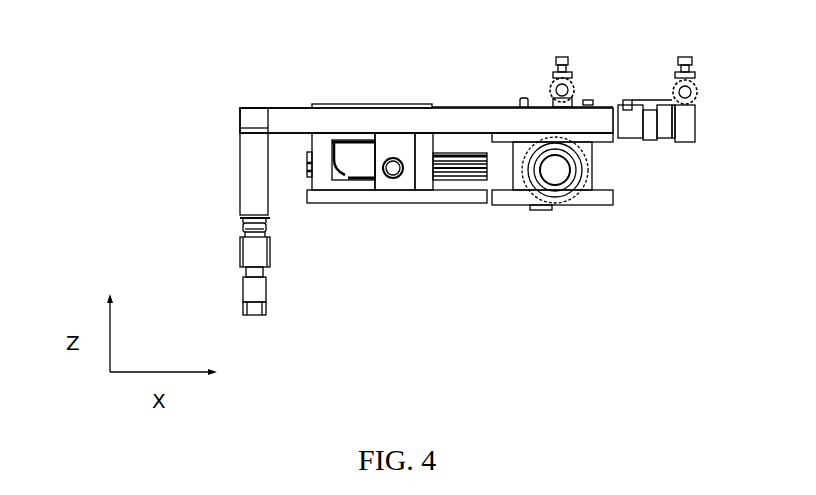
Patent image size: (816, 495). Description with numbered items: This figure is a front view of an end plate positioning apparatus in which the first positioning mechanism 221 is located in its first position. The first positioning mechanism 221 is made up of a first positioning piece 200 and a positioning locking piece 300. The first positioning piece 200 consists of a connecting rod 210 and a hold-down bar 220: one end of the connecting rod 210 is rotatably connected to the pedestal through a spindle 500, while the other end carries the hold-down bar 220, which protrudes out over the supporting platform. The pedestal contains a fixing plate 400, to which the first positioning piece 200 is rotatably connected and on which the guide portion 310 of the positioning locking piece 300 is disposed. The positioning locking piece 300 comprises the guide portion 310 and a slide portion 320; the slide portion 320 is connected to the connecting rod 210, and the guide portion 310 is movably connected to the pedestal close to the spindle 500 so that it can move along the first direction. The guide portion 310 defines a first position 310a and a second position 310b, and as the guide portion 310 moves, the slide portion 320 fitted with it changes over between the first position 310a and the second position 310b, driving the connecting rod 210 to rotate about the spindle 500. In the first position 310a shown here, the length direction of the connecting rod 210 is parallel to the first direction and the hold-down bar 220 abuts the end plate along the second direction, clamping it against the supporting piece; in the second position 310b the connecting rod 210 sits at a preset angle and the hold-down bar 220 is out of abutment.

The first positioning piece 200 is at (146, 160).
The connecting rod 210 is at (302, 118).
The hold-down bar 220 is at (250, 173).
The first positioning mechanism 221 is at (185, 77).
The positioning locking piece 300 is at (422, 168).
The guide portion 310 is at (328, 185).
The first position 310a is at (412, 170).
The second position 310b is at (368, 177).
The slide portion 320 is at (385, 183).
The fixing plate 400 is at (458, 200).
The spindle 500 is at (557, 167).